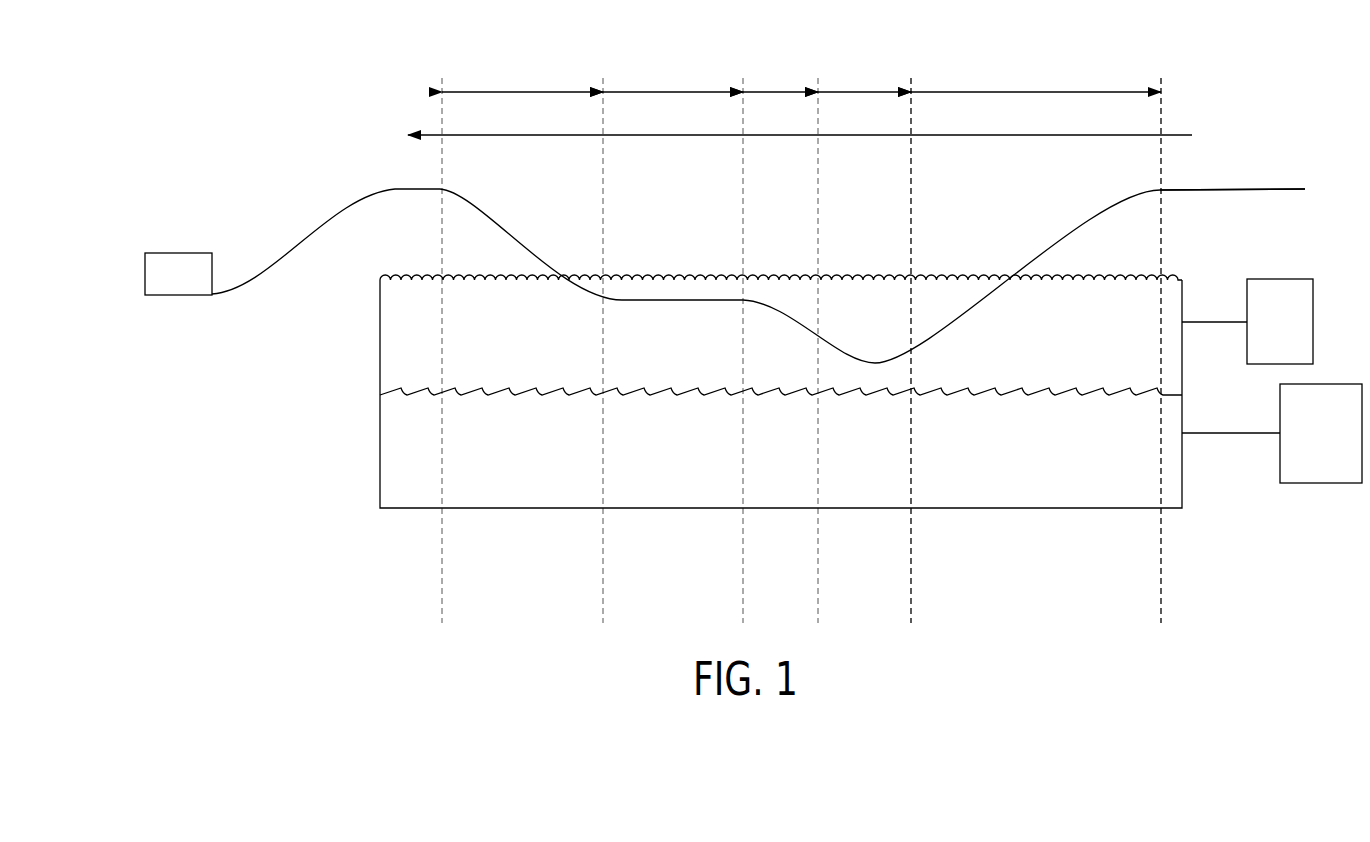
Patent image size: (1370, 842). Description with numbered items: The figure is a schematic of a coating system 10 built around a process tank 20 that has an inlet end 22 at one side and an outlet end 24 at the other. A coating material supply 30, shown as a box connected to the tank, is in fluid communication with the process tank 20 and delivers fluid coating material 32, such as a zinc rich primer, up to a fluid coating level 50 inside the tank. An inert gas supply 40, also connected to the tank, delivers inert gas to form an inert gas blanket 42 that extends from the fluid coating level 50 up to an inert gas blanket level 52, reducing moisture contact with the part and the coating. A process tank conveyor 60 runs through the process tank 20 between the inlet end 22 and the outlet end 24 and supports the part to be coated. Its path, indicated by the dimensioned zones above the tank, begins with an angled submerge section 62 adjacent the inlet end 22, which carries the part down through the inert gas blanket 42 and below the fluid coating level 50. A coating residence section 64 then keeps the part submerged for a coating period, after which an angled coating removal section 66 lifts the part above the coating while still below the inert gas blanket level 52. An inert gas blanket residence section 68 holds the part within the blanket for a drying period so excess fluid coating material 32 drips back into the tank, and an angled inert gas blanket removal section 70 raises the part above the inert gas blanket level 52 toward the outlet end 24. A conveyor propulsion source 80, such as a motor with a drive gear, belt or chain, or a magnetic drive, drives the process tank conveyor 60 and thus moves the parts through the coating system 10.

The coating system 10 is at (292, 140).
The process tank 20 is at (378, 448).
The inlet end 22 is at (1184, 233).
The outlet end 24 is at (394, 157).
The coating material supply 30 is at (1272, 433).
The fluid coating material 32 is at (781, 451).
The inert gas supply 40 is at (1247, 321).
The inert gas blanket 42 is at (781, 337).
The fluid coating level 50 is at (378, 388).
The inert gas blanket level 52 is at (380, 271).
The process tank conveyor 60 is at (1287, 185).
The submerge section 62 is at (1028, 92).
The coating residence section 64 is at (868, 92).
The coating removal section 66 is at (780, 92).
The inert gas blanket residence section 68 is at (667, 92).
The inert gas blanket removal section 70 is at (519, 92).
The conveyor propulsion source 80 is at (178, 274).